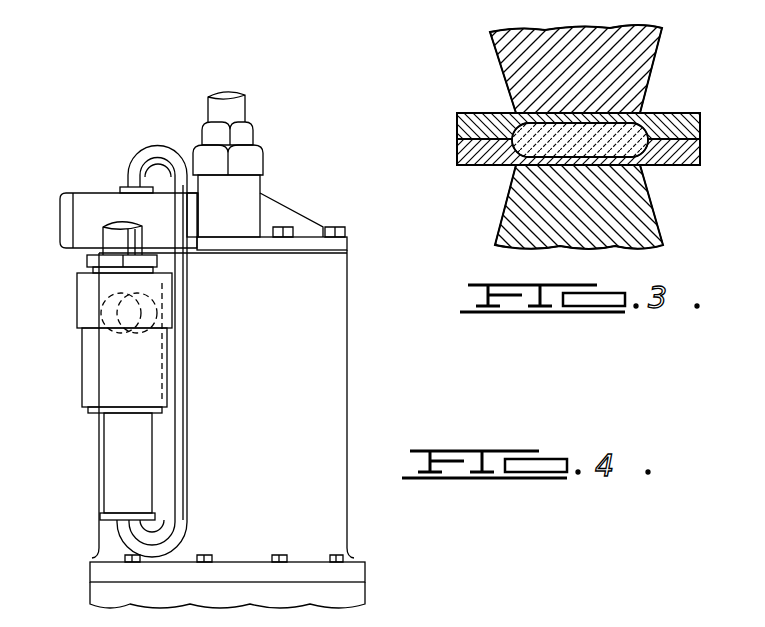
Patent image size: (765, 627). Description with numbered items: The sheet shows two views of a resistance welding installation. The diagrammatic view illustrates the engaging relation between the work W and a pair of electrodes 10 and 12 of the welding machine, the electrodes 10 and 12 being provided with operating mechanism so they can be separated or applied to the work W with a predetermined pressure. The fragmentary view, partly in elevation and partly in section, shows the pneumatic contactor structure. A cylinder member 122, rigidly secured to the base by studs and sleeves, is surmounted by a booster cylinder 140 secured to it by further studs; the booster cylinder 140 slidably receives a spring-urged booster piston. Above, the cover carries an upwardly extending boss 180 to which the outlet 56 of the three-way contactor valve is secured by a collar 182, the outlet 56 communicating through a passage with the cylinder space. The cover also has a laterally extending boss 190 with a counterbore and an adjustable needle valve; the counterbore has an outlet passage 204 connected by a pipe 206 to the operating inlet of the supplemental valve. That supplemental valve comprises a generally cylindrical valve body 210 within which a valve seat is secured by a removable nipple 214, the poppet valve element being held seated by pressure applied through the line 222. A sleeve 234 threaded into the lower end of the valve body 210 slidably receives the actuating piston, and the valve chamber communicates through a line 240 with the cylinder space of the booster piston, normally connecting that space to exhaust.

In FIG. 3, the electrode 10 is at (642, 62).
In FIG. 3, the electrode 12 is at (645, 218).
In FIG. 3, the work W is at (650, 124).
In FIG. 4, the booster cylinder 140 is at (333, 405).
In FIG. 4, the cylinder member 122 is at (352, 595).
In FIG. 4, the laterally extending boss 190 is at (85, 170).
In FIG. 4, the pipe 206 is at (182, 370).
In FIG. 4, the outlet passage 204 is at (122, 186).
In FIG. 4, the line 222 is at (113, 233).
In FIG. 4, the removable nipple 214 is at (158, 262).
In FIG. 4, the valve body 210 is at (92, 396).
In FIG. 4, the line 240 is at (95, 313).
In FIG. 4, the sleeve 234 is at (107, 468).
In FIG. 4, the upwardly extending boss 180 is at (248, 210).
In FIG. 4, the collar 182 is at (258, 158).
In FIG. 4, the outlet 56 is at (243, 133).